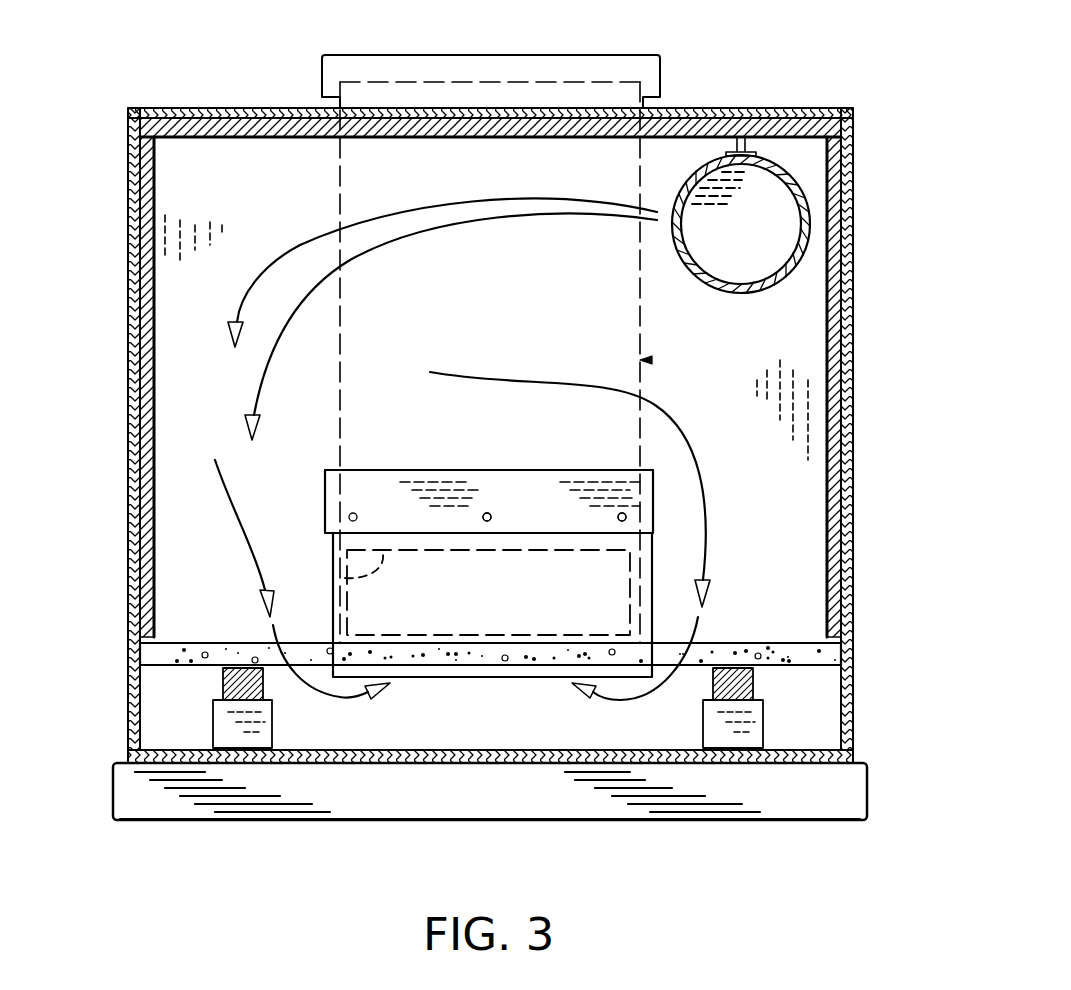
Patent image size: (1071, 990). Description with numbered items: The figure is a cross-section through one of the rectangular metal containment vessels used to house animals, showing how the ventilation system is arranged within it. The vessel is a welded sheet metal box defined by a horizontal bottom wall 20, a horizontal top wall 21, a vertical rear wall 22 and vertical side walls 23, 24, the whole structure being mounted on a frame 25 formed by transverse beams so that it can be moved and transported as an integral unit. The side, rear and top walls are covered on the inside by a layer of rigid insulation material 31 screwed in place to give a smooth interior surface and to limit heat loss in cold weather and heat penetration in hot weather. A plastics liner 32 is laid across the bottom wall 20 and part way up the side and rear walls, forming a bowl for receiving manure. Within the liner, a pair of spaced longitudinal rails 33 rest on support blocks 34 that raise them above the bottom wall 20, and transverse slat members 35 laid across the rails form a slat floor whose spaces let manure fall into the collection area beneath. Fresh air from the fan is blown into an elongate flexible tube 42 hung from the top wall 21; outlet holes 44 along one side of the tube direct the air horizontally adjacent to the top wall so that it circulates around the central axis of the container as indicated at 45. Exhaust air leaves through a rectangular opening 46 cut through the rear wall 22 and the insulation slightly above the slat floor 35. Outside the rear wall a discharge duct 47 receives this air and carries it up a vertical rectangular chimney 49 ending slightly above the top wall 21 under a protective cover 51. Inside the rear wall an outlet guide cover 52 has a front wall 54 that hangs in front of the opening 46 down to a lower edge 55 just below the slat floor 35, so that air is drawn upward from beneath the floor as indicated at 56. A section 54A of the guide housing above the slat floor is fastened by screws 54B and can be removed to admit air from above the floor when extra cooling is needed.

The bottom wall 20 is at (497, 773).
The top wall 21 is at (742, 107).
The rear wall 22 is at (178, 297).
The side wall 23 is at (857, 367).
The side wall 24 is at (127, 445).
The frame 25 is at (636, 812).
The layer of rigid insulation material 31 is at (260, 140).
The plastics liner 32 is at (465, 746).
The longitudinal rails 33 is at (222, 683).
The support blocks 34 is at (213, 728).
The transverse slat members 35 is at (718, 643).
The elongate tube 42 is at (711, 284).
The outlet holes 44 is at (688, 222).
The air flow around central axis 45 is at (378, 248).
The rectangular opening 46 is at (345, 578).
The discharge duct 47 is at (652, 360).
The chimney 49 is at (537, 100).
The protective cover 51 is at (428, 54).
The outlet guide cover 52 is at (412, 468).
The front wall 54 is at (608, 573).
The section above the slat floor 54A is at (480, 470).
The screws 54B is at (621, 512).
The lower edge 55 is at (472, 680).
The upward air escape 56 is at (336, 698).